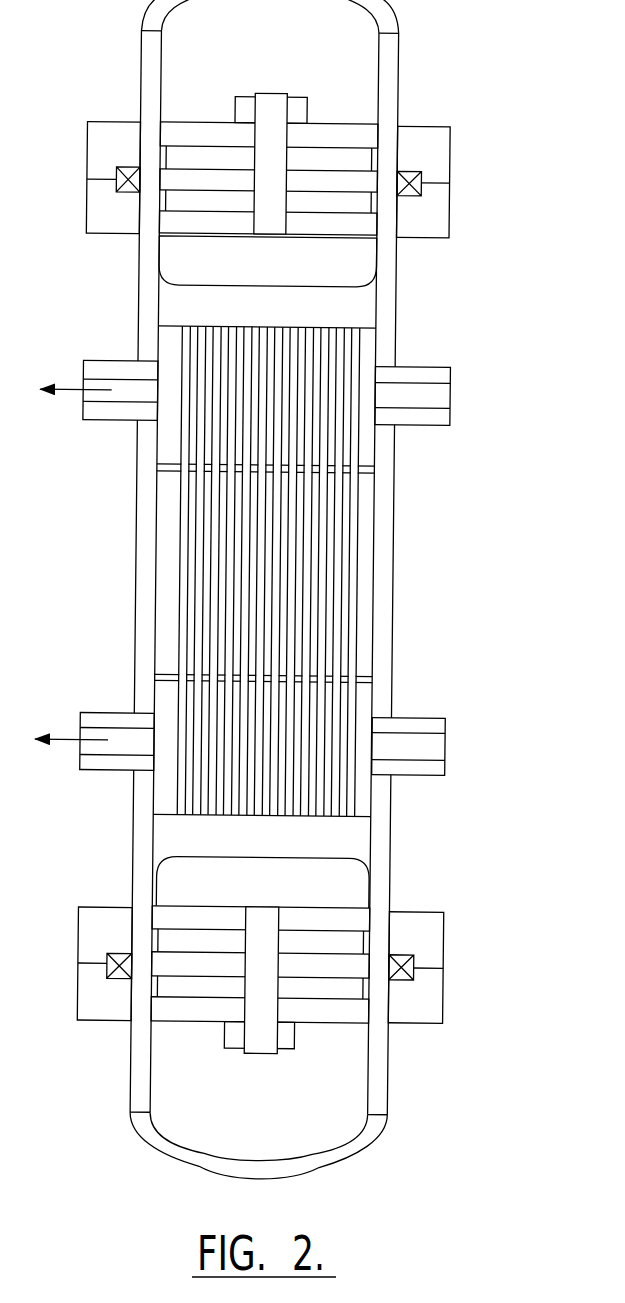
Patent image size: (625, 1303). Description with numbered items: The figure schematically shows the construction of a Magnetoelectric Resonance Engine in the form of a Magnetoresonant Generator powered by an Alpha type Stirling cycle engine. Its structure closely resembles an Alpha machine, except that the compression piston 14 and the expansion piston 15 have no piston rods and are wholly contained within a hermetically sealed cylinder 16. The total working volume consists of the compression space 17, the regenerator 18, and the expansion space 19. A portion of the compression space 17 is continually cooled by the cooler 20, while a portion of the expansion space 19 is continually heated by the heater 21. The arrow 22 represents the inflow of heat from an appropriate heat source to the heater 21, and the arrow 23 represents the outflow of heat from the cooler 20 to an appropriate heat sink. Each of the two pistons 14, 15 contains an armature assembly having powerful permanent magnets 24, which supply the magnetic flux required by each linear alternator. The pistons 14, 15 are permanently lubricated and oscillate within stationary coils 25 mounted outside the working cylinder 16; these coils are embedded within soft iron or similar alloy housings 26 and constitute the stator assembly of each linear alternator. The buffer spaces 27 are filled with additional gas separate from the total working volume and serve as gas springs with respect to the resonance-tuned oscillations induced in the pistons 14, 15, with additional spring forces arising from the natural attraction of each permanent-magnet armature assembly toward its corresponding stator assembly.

The compression piston 14 is at (256, 903).
The expansion piston 15 is at (269, 240).
The hermetically sealed cylinder 16 is at (135, 64).
The compression space 17 is at (251, 848).
The regenerator 18 is at (306, 572).
The expansion space 19 is at (253, 320).
The cooler 20 is at (282, 743).
The heater 21 is at (281, 405).
The arrow 22 is at (405, 396).
The arrow 23 is at (404, 744).
The permanent magnets 24 is at (329, 202).
The stationary coils 25 is at (112, 172).
The housings 26 is at (433, 134).
The buffer spaces 27 is at (252, 60).